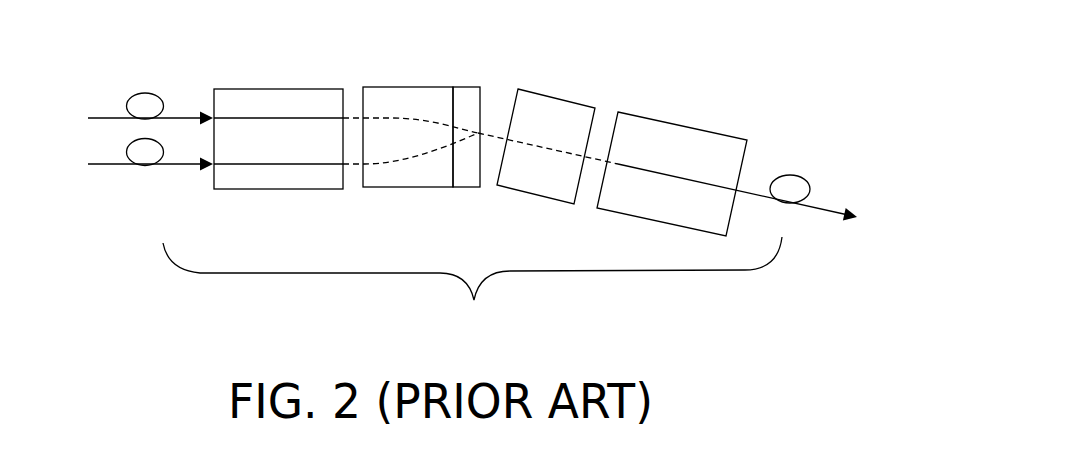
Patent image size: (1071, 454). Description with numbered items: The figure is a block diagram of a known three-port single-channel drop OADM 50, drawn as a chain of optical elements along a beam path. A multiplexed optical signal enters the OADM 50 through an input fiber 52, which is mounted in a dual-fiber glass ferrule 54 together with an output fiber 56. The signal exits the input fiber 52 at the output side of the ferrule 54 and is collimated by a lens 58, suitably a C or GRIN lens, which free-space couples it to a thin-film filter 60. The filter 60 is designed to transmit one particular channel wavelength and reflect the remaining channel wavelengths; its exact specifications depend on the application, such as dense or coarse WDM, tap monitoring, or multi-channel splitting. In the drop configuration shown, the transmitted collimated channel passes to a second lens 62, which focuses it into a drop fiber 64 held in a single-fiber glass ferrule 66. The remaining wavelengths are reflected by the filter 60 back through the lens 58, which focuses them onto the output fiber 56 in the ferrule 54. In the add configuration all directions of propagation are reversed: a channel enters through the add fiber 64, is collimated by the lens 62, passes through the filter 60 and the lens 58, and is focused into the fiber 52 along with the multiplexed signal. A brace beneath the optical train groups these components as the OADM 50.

The 3-port single-channel drop OADM 50 is at (472, 285).
The input fiber 52 is at (103, 118).
The dual-fiber glass ferrule 54 is at (272, 89).
The output fiber 56 is at (105, 165).
The lens 58 is at (390, 86).
The thin-film filter 60 is at (473, 85).
The second lens 62 is at (558, 97).
The drop fiber 64 is at (823, 203).
The single-fiber glass ferrule 66 is at (673, 122).